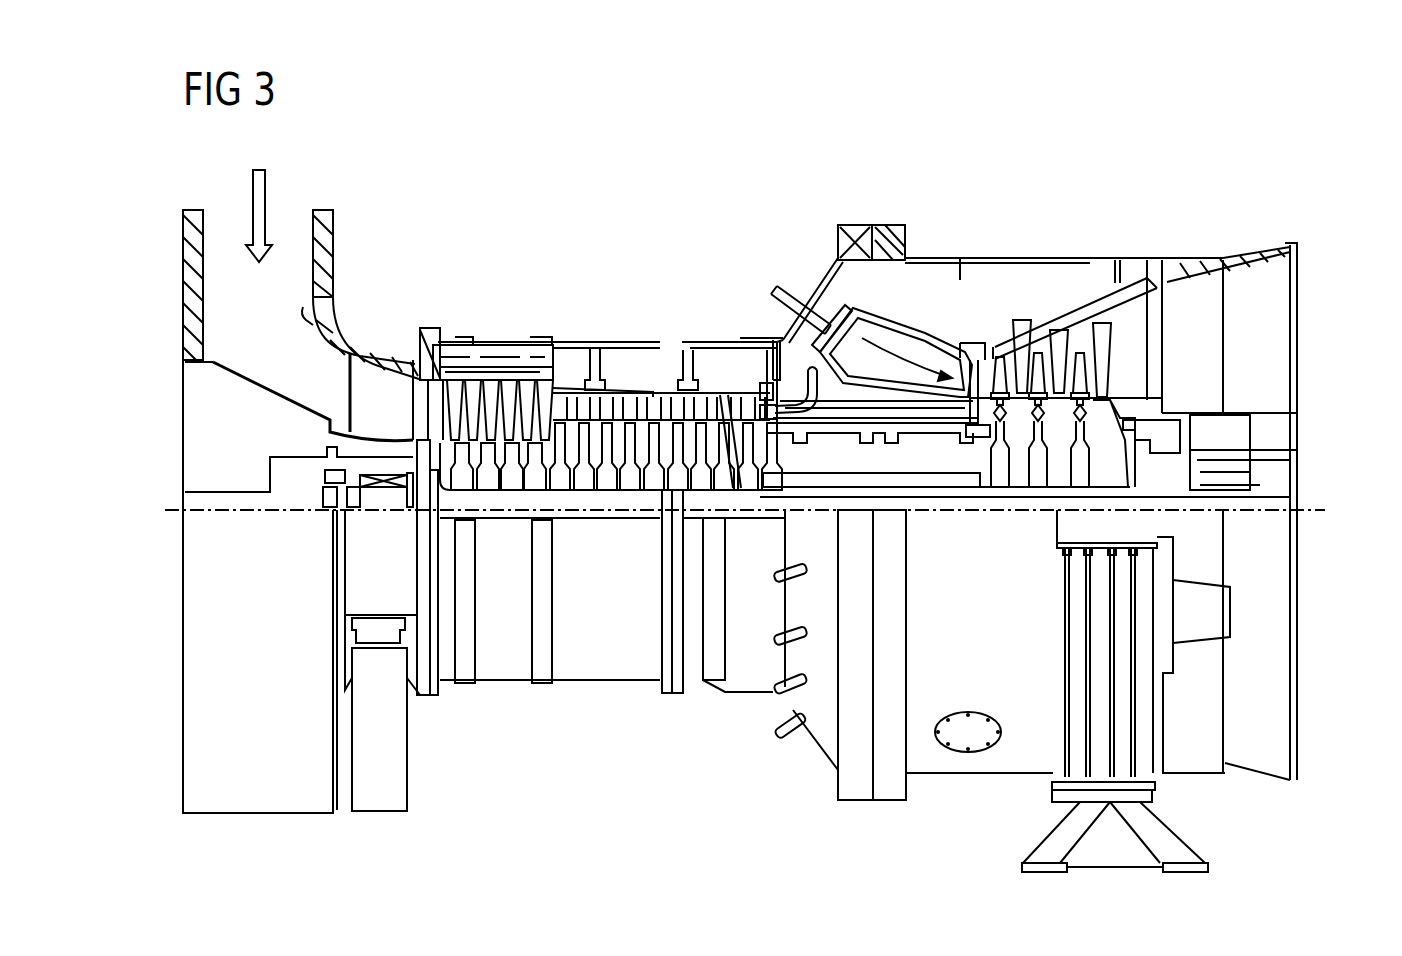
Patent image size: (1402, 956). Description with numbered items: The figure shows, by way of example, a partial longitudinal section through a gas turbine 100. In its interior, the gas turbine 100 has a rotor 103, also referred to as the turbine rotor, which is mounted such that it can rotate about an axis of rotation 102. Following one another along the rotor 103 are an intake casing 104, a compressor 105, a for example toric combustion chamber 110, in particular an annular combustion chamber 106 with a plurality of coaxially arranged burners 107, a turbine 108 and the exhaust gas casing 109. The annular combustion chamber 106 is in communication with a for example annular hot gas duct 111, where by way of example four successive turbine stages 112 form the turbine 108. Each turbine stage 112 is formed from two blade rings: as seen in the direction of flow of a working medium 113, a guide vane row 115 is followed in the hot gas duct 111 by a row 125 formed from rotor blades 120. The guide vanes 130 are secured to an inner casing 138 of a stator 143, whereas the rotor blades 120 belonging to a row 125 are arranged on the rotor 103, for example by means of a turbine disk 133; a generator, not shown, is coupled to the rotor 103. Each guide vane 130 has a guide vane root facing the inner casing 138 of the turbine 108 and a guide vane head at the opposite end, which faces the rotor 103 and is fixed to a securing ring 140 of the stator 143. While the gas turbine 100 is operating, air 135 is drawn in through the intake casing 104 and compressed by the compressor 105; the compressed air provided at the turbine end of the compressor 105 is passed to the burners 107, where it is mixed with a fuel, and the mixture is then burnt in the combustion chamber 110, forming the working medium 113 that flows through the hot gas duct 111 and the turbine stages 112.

The gas turbine 100 is at (593, 222).
The axis of rotation 102 is at (173, 505).
The rotor 103 is at (805, 478).
The intake casing 104 is at (323, 277).
The compressor 105 is at (517, 328).
The annular combustion chamber 106 is at (933, 358).
The burners 107 is at (775, 288).
The turbine 108 is at (993, 230).
The exhaust gas casing 109 is at (1210, 253).
The combustion chamber 110 is at (870, 328).
The hot gas duct 111 is at (1130, 342).
The turbine stages 112 is at (1113, 231).
The working medium 113 is at (868, 330).
The guide vane row 115 is at (1076, 293).
The rotor blades 120 is at (1040, 425).
The row 125 is at (1133, 278).
The guide vanes 130 is at (1000, 425).
The turbine disk 133 is at (1107, 475).
The air 135 is at (263, 200).
The inner casing 138 is at (1020, 308).
The securing ring 140 is at (972, 365).
The stator 143 is at (957, 257).